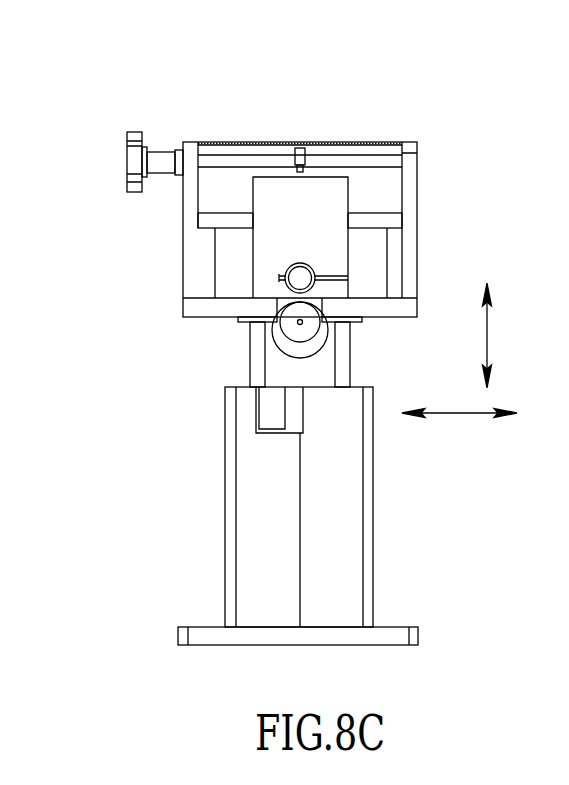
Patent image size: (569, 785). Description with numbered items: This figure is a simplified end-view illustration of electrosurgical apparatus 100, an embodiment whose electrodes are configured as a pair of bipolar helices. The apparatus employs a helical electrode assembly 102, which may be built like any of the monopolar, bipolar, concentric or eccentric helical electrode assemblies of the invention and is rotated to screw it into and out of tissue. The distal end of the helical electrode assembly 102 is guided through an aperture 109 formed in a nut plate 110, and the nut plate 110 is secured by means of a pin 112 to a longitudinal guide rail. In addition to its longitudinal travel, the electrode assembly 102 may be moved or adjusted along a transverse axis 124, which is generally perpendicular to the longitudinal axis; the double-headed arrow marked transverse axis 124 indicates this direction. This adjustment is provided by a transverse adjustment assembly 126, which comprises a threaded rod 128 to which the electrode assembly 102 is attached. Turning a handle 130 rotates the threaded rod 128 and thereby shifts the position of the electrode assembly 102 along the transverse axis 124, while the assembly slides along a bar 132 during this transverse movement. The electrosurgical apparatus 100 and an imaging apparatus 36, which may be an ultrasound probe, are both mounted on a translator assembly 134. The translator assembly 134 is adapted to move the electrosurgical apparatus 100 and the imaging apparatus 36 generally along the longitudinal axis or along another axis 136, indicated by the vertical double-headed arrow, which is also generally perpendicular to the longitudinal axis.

The electrosurgical apparatus 100 is at (412, 92).
The handle 130 is at (128, 140).
The transverse adjustment assembly 126 is at (428, 185).
The threaded rod 128 is at (245, 160).
The pin 112 is at (295, 148).
The helical electrode assembly 102 is at (294, 260).
The nut plate 110 is at (260, 240).
The aperture 109 is at (287, 267).
The bar 132 is at (395, 248).
The imaging apparatus 36 is at (322, 337).
The translator assembly 134 is at (350, 553).
The axis 136 is at (487, 340).
The transverse axis 124 is at (438, 413).